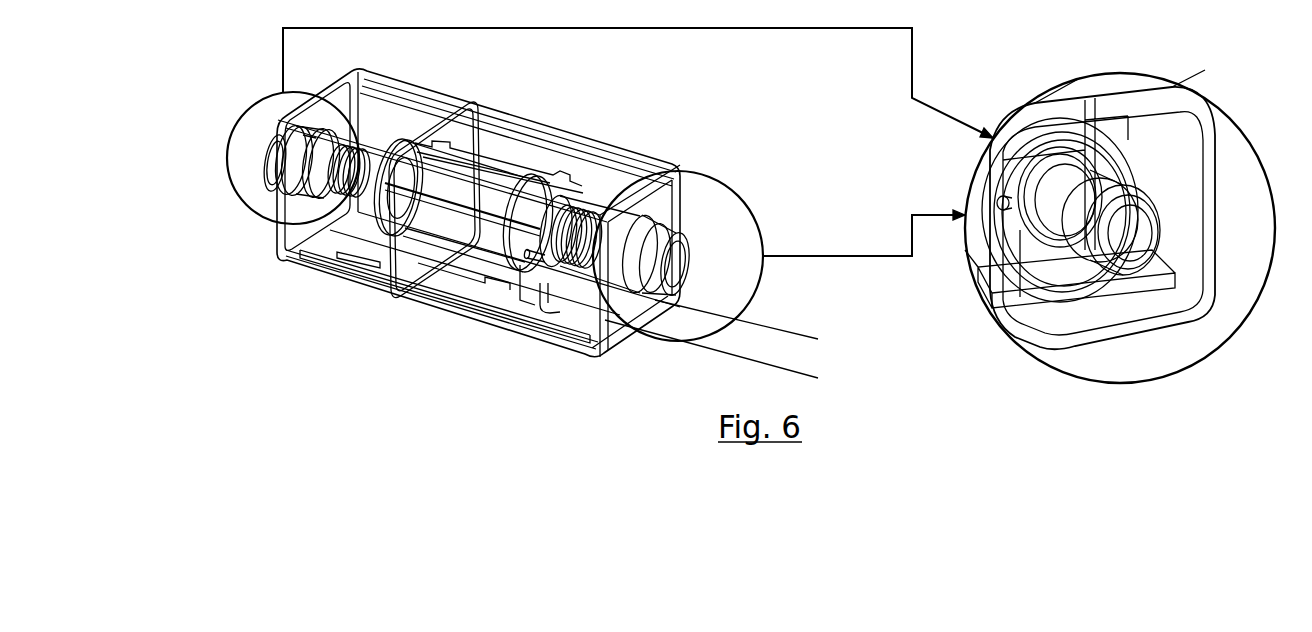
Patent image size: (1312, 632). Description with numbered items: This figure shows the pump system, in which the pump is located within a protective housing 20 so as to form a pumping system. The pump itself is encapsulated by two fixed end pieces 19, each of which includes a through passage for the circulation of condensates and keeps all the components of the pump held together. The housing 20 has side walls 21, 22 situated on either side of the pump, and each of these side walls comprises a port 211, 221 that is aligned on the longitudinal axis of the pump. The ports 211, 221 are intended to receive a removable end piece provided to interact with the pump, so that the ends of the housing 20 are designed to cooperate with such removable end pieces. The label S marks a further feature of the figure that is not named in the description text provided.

The fixed end piece 19 is at (580, 223).
The housing 20 is at (507, 138).
The side wall 21 is at (657, 207).
The port 211 is at (692, 252).
The side wall 22 is at (300, 120).
The port 221 is at (280, 156).
The support surface S is at (563, 320).